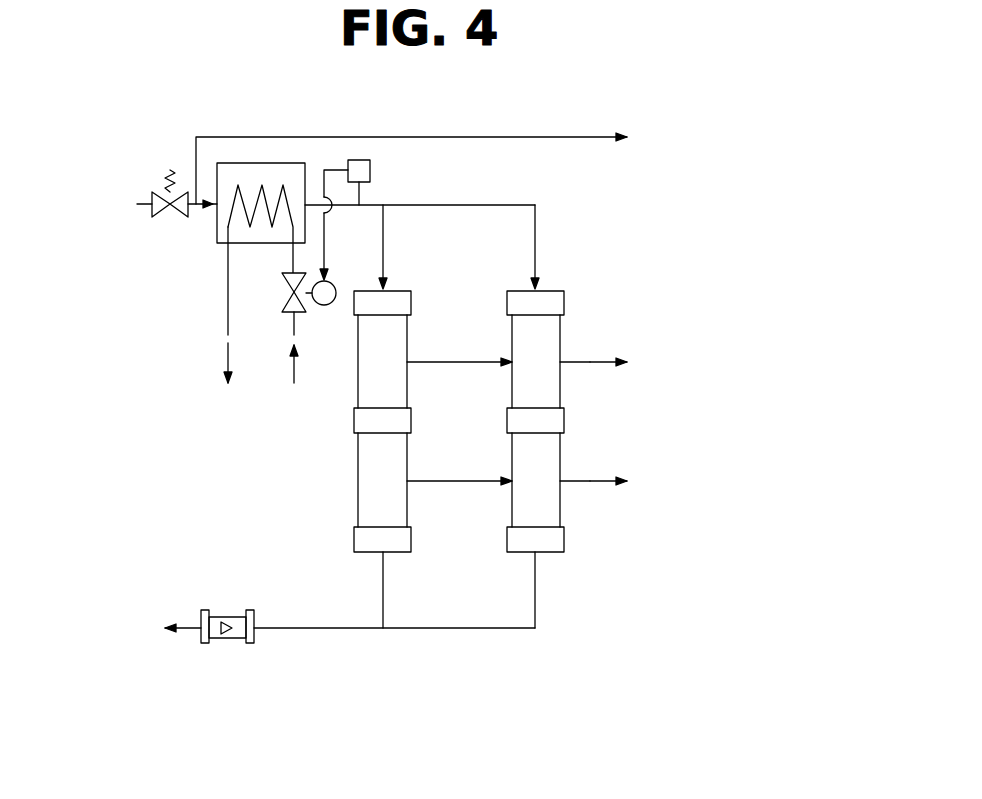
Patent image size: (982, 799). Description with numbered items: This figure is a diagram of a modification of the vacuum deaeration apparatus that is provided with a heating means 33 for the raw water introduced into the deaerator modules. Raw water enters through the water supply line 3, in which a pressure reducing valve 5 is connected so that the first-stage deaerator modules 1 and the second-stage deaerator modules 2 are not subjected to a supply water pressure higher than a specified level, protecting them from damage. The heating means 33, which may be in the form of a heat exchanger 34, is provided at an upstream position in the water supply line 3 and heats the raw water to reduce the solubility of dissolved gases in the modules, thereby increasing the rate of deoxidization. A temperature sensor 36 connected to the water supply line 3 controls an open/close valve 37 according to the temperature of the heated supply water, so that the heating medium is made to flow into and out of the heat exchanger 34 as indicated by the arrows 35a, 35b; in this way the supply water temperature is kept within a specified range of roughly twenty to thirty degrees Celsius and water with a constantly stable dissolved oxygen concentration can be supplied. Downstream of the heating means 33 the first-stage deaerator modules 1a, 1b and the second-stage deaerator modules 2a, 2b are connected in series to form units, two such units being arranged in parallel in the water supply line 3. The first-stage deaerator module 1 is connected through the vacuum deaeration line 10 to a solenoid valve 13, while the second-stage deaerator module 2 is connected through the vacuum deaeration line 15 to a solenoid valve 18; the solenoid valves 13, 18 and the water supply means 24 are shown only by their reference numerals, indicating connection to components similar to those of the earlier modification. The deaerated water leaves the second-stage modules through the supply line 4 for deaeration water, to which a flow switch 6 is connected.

The first-stage deaerator module 1 is at (439, 246).
The first-stage deaerator module 1a is at (382, 362).
The first-stage deaerator module 1b is at (535, 362).
The second-stage deaerator module 2 is at (431, 592).
The second-stage deaerator module 2a is at (382, 492).
The second-stage deaerator module 2b is at (535, 492).
The water supply line 3 is at (137, 204).
The supply line for deaeration water 4 is at (308, 629).
The pressure reducing valve 5 is at (170, 170).
The flow switch 6 is at (225, 640).
The vacuum deaeration line 10 is at (450, 364).
The solenoid valve 13 is at (632, 360).
The vacuum deaeration line 15 is at (450, 483).
The solenoid valve 18 is at (632, 480).
The water supply means 24 is at (434, 165).
The heating means 33 is at (235, 259).
The heat exchanger 34 is at (227, 217).
The arrow 35a is at (296, 349).
The arrow 35b is at (223, 326).
The temperature sensor 36 is at (355, 160).
The open/close valve 37 is at (324, 306).